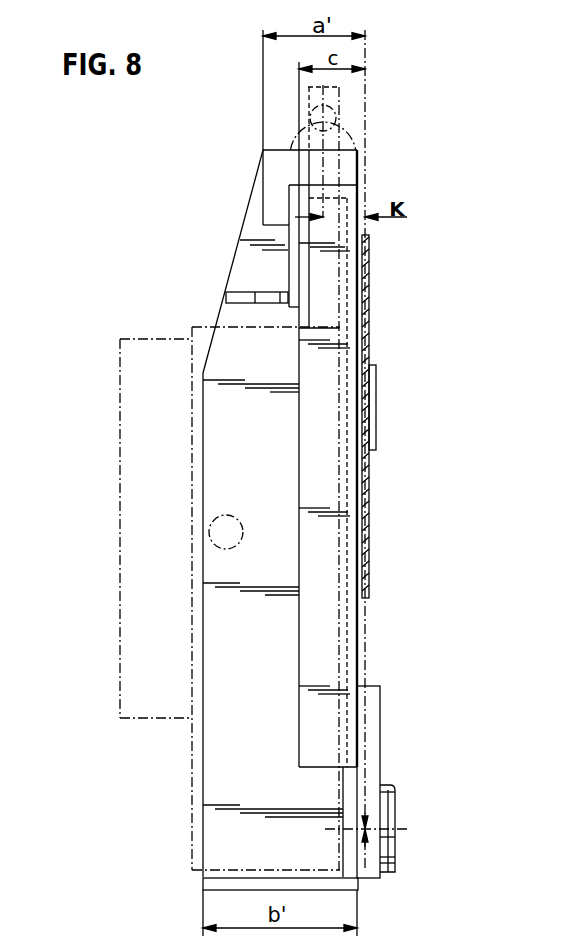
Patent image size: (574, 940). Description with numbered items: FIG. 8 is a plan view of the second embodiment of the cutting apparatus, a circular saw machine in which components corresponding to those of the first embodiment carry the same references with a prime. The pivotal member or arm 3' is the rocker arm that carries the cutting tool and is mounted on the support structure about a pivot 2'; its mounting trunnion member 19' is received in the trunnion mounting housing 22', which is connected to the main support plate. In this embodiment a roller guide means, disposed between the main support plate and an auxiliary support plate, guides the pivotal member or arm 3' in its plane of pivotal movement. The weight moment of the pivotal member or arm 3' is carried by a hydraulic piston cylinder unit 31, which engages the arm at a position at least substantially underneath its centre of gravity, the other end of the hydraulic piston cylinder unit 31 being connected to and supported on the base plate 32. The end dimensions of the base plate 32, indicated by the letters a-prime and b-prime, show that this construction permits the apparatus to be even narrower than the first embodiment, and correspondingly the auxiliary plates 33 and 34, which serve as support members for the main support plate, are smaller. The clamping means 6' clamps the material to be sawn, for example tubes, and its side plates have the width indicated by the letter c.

The pivotal member or arm 3' is at (210, 602).
The clamping means 6' is at (293, 458).
The hydraulic piston cylinder unit 31 is at (228, 515).
The base plate 32 is at (238, 309).
The auxiliary plate 34 is at (255, 298).
The auxiliary plate 33 is at (223, 882).
The trunnion mounting housing 22' is at (381, 781).
The pivot 2' is at (412, 828).
The mounting trunnion member 19' is at (416, 869).